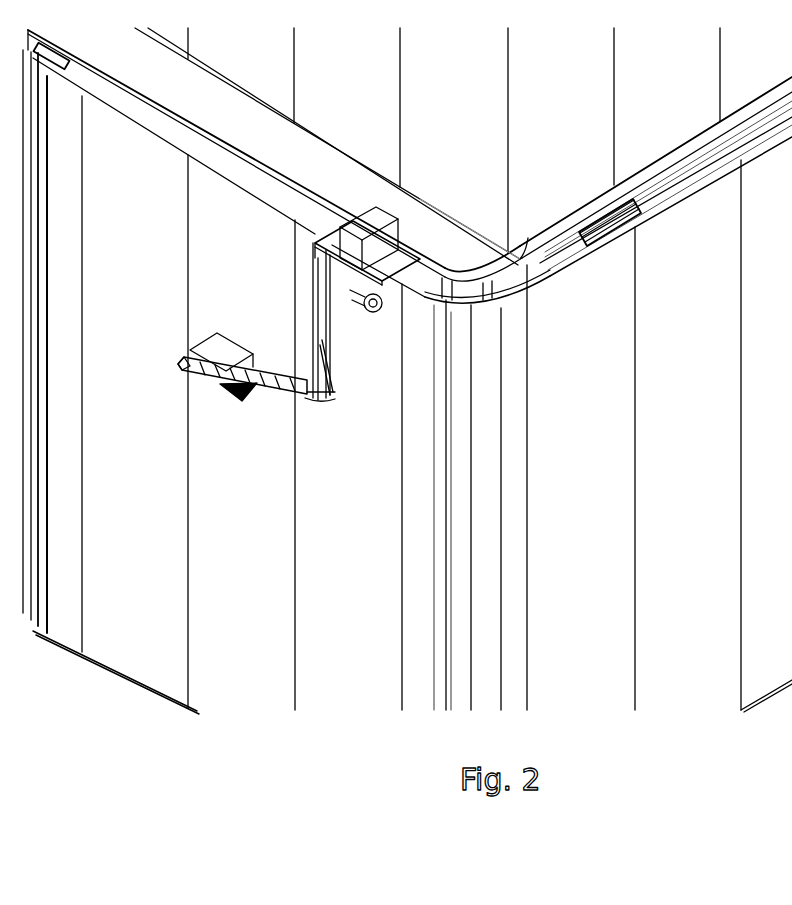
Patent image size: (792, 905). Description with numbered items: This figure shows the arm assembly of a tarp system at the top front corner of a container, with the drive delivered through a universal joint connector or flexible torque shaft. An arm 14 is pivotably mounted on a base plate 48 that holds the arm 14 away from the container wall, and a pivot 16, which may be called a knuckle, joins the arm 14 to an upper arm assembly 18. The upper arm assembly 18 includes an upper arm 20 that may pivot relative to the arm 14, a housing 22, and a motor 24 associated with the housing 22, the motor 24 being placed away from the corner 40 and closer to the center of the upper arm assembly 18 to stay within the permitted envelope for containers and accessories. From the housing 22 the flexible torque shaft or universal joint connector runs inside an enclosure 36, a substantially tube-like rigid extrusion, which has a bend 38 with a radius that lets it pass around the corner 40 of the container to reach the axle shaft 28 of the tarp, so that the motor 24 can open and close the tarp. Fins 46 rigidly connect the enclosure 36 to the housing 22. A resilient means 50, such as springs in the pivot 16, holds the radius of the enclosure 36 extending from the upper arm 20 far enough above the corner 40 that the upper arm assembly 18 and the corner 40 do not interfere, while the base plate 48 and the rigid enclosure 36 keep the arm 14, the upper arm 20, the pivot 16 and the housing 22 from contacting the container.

The arm 14 is at (257, 386).
The pivot 16 is at (314, 410).
The upper arm assembly 18 is at (313, 298).
The upper arm 20 is at (324, 343).
The housing 22 is at (334, 263).
The motor 24 is at (368, 315).
The axle shaft 28 is at (655, 207).
The enclosure 36 is at (507, 300).
The bend 38 is at (471, 313).
The corner 40 is at (462, 257).
The fins 46 is at (355, 238).
The base plate 48 is at (220, 347).
The resilient means 50 is at (186, 361).